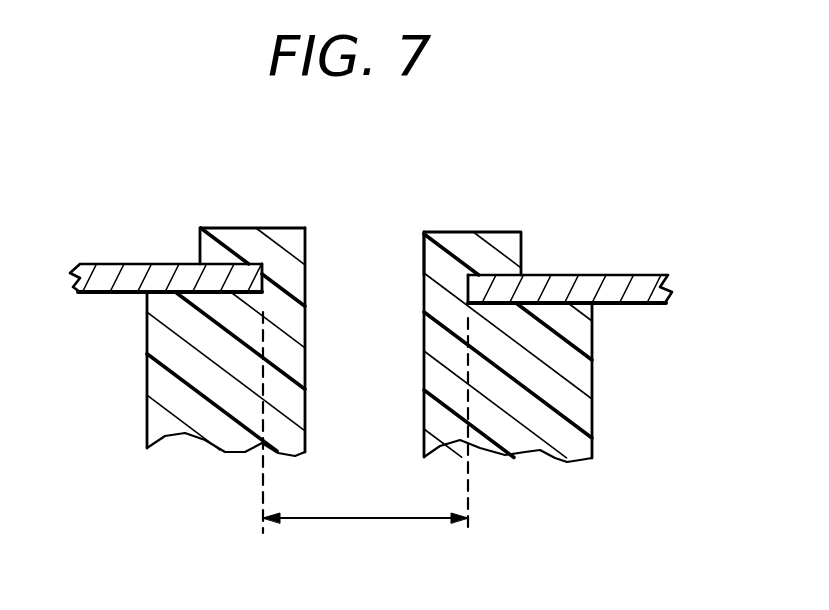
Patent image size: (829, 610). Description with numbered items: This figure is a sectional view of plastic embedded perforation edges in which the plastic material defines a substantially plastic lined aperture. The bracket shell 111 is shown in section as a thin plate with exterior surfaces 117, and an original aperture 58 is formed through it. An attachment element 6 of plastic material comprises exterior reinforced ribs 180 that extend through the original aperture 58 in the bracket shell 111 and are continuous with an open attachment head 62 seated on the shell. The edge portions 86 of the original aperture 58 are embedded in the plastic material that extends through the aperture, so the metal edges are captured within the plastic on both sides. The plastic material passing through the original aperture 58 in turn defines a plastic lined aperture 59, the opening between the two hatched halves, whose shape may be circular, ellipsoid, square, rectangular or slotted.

The attachment element 6 is at (188, 505).
The original aperture 58 is at (350, 520).
The plastic lined aperture 59 is at (363, 233).
The open attachment head 62 is at (255, 235).
The edge portions 86 is at (262, 276).
The bracket shell 111 is at (80, 197).
The exterior surfaces 117 is at (120, 293).
The exterior reinforced ribs 180 is at (163, 385).